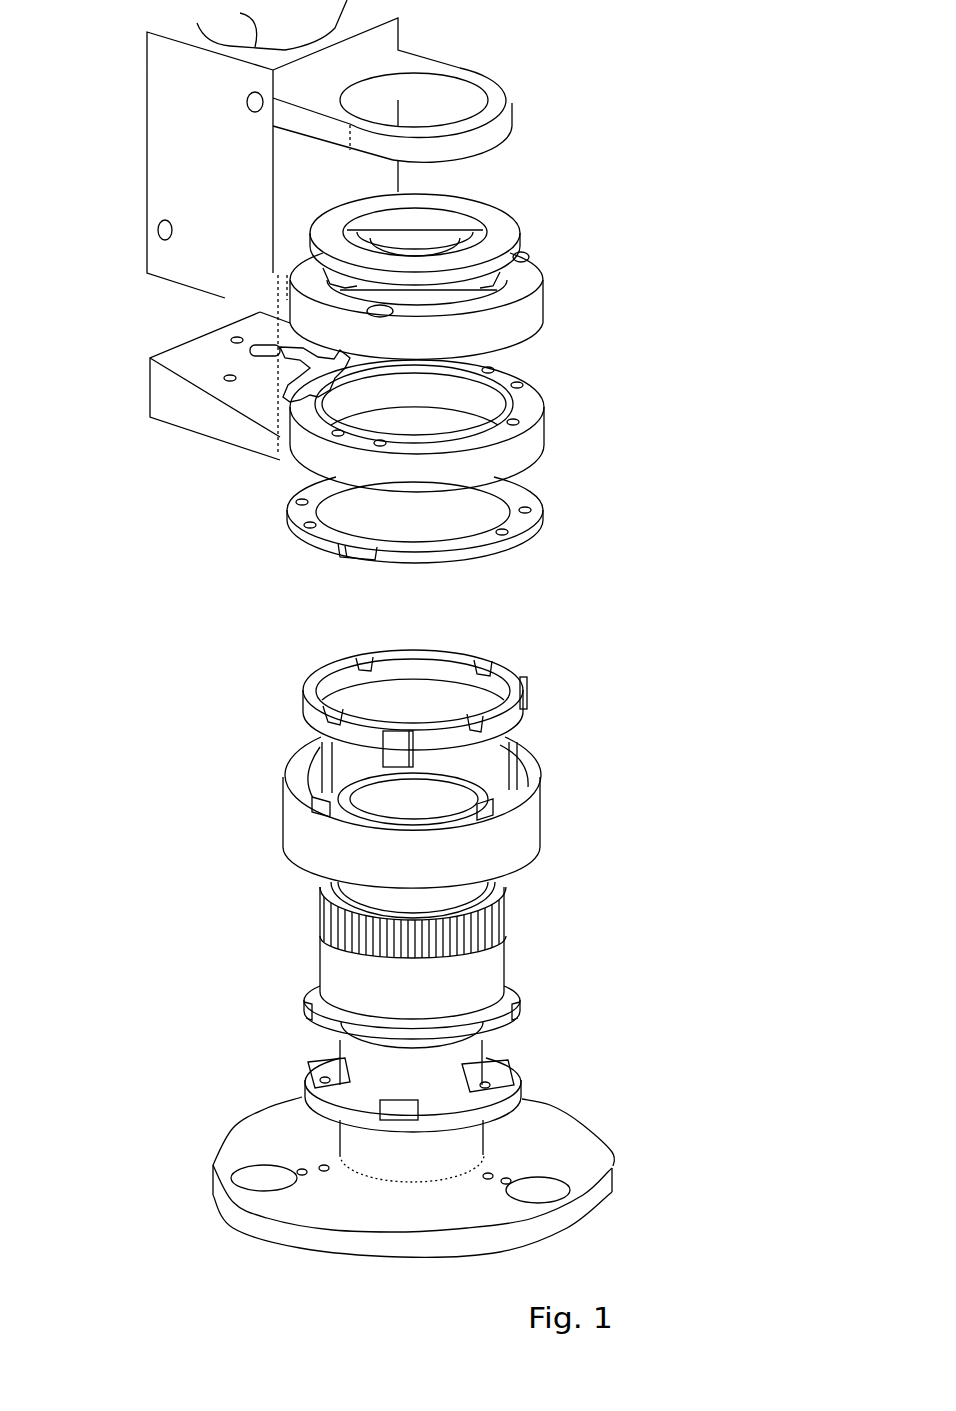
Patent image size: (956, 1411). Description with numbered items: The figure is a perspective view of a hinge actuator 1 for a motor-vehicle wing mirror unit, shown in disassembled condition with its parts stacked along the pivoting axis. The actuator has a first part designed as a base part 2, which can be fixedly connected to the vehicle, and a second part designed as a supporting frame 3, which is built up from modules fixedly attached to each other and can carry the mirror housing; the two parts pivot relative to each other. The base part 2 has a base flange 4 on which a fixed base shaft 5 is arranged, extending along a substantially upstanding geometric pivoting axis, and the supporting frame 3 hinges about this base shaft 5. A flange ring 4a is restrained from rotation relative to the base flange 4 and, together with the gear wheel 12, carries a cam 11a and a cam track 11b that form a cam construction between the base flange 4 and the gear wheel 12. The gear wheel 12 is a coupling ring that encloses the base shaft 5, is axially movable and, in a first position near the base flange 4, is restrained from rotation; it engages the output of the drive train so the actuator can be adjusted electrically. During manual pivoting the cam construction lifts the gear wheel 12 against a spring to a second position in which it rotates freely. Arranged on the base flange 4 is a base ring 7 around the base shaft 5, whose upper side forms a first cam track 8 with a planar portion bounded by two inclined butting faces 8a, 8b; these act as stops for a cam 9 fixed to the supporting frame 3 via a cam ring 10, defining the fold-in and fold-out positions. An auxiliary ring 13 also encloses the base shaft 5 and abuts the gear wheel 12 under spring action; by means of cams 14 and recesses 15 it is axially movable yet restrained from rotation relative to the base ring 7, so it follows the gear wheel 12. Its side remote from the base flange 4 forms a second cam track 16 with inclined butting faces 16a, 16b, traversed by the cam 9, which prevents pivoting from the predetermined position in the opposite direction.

The hinge actuator 1 is at (615, 171).
The base part 2 is at (444, 1211).
The supporting frame 3 is at (180, 182).
The base flange 4 is at (577, 1160).
The flange ring 4a is at (523, 1075).
The base shaft 5 is at (470, 1142).
The base ring 7 is at (404, 820).
The first cam track 8 is at (483, 838).
The inclined butting face 8a is at (244, 829).
The inclined butting face 8b is at (563, 833).
The cam 9 is at (433, 528).
The cam ring 10 is at (302, 513).
The cam 11a is at (393, 1085).
The cam track 11b is at (332, 1023).
The gear wheel 12 is at (485, 967).
The auxiliary ring 13 is at (394, 700).
The cam 14 is at (520, 680).
The recess 15 is at (503, 755).
The second cam track 16 is at (397, 728).
The inclined butting face 16a is at (259, 715).
The inclined butting face 16b is at (475, 717).